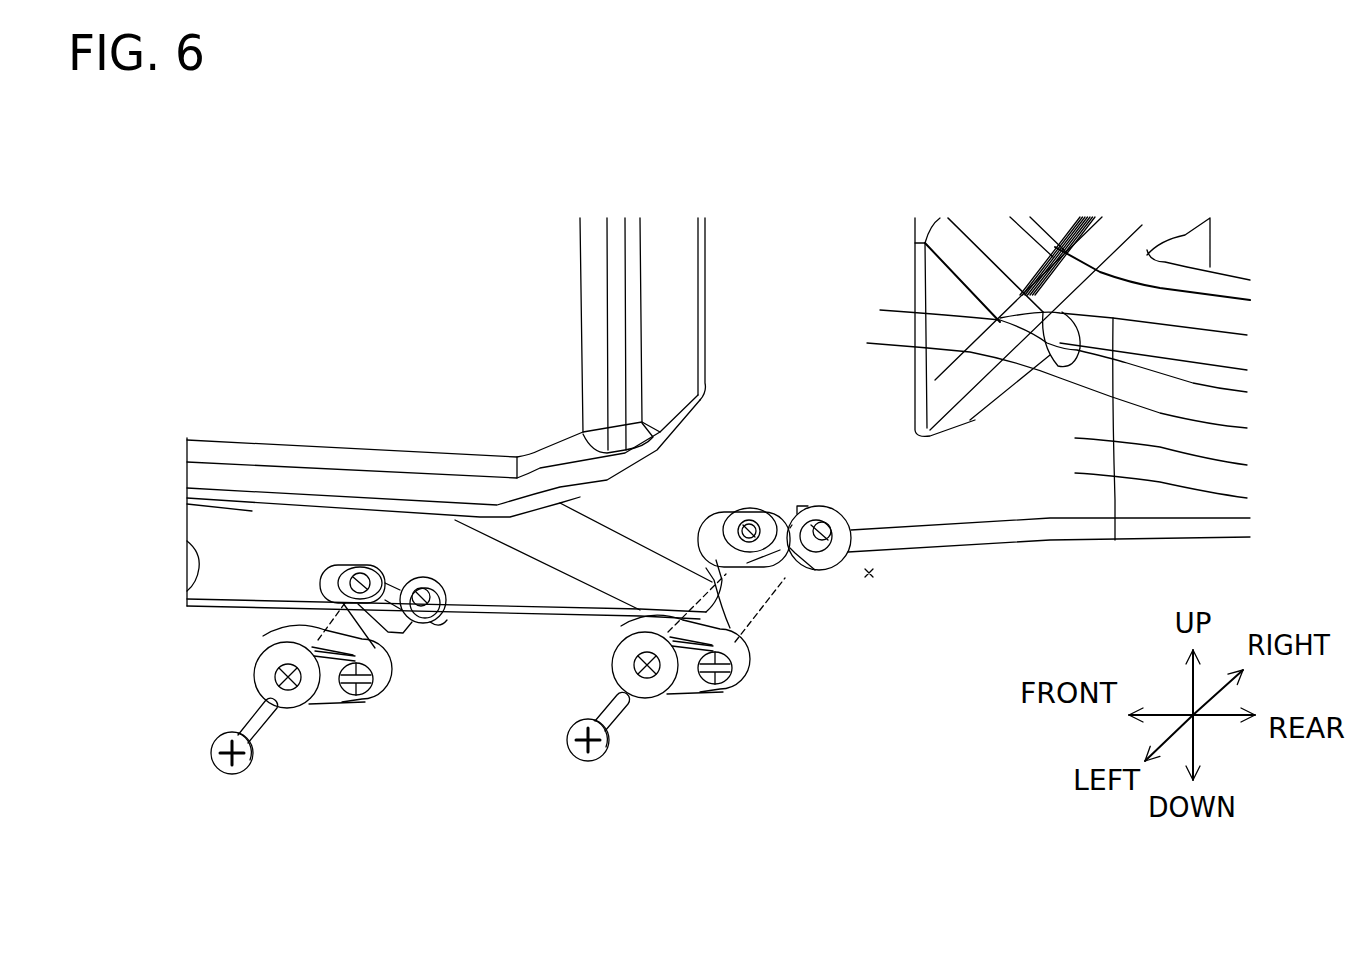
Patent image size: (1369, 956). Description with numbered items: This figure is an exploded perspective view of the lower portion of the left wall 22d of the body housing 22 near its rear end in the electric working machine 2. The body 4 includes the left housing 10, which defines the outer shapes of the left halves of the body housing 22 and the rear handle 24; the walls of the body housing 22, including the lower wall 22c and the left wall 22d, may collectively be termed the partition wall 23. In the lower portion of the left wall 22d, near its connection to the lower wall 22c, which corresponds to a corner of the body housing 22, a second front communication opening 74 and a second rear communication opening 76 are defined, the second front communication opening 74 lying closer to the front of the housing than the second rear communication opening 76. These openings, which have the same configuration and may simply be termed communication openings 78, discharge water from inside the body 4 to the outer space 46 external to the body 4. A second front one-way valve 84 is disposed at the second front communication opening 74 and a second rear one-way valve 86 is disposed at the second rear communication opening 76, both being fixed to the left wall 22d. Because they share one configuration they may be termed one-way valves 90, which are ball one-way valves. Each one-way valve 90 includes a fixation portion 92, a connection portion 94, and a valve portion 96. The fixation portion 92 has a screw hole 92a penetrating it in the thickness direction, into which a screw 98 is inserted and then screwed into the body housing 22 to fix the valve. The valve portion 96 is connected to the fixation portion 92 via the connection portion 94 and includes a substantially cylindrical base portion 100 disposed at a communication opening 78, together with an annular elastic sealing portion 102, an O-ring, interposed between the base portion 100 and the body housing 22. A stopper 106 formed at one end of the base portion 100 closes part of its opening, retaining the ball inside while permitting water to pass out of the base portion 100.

The electric working machine 2 is at (1237, 555).
The body 4 is at (1075, 554).
The left housing 10 is at (1247, 498).
The body housing 22 is at (1247, 392).
The partition wall 23 is at (1247, 428).
The rear handle 24 is at (1247, 465).
The lower wall 22c is at (1003, 543).
The left wall 22d is at (873, 404).
The outer space 46 is at (869, 578).
The second front communication opening 74 is at (423, 577).
The second rear communication opening 76 is at (813, 507).
The communication openings 78 is at (633, 340).
The second front one-way valve 84 is at (237, 663).
The second rear one-way valve 86 is at (597, 647).
The one-way valves 90 is at (454, 359).
The fixation portion 92 is at (302, 708).
The screw hole 92a is at (288, 662).
The connection portion 94 is at (328, 692).
The valve portion 96 is at (390, 702).
The screw 98 is at (218, 773).
The base portion 100 is at (392, 673).
The sealing portion 102 is at (341, 566).
The stopper 106 is at (356, 698).